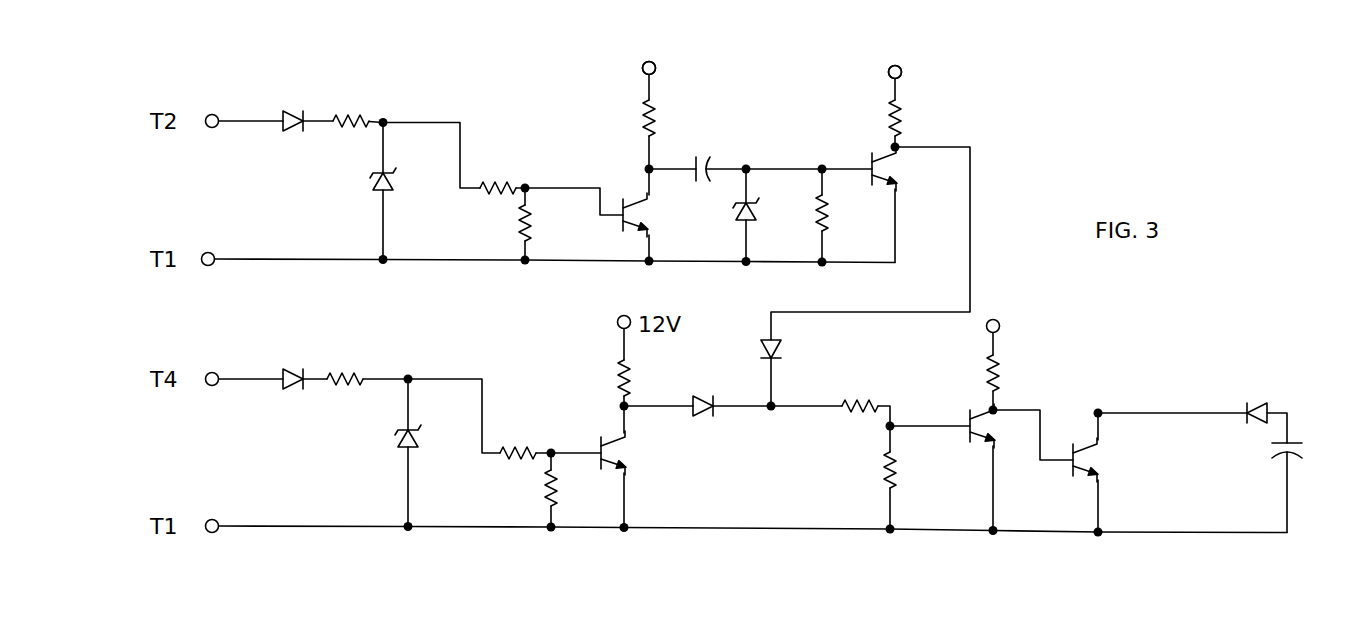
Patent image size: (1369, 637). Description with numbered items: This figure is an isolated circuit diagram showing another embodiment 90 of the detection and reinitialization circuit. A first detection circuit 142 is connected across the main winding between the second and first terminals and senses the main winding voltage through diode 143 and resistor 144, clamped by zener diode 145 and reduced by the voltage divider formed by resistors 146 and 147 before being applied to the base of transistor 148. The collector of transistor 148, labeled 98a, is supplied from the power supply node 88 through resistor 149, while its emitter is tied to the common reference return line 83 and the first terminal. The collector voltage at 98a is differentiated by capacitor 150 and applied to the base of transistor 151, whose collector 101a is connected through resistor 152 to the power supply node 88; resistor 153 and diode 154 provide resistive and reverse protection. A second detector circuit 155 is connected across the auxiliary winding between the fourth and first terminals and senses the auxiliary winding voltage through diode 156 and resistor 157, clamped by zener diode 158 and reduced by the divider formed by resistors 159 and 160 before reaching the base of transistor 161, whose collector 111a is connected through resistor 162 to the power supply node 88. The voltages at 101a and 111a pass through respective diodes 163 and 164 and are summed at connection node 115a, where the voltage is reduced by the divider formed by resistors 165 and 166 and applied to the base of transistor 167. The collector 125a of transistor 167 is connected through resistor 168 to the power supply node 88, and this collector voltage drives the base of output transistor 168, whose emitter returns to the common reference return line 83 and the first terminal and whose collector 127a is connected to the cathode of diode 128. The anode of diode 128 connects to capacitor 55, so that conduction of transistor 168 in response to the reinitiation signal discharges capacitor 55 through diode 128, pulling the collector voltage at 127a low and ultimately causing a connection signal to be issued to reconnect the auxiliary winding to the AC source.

The capacitor 55 is at (1305, 452).
The common reference return line 83 is at (576, 264).
The power supply node 88 is at (642, 68).
The detection and reinitialization circuit embodiment 90 is at (1040, 235).
The collector of transistor 148 98a is at (645, 165).
The collector of transistor 151 101a is at (898, 146).
The collector of transistor 161 111a is at (626, 412).
The connection node 115a is at (771, 410).
The collector of transistor 167 125a is at (1000, 408).
The collector of transistor 168 127a is at (1102, 413).
The diode 128 is at (1262, 400).
The first detection circuit 142 is at (326, 186).
The diode 143 is at (292, 108).
The resistor 144 is at (363, 116).
The zener diode 145 is at (392, 183).
The resistor 146 is at (498, 186).
The resistor 147 is at (514, 230).
The transistor 148 is at (640, 220).
The resistor 149 is at (640, 112).
The capacitor 150 is at (704, 160).
The transistor 151 is at (890, 172).
The resistor 152 is at (885, 118).
The resistor 153 is at (828, 215).
The diode 154 is at (756, 212).
The second detector circuit 155 is at (292, 447).
The diode 156 is at (290, 368).
The resistor 157 is at (346, 376).
The zener diode 158 is at (395, 440).
The resistor 159 is at (505, 456).
The resistor 160 is at (560, 492).
The transistor 161 is at (625, 472).
The resistor 162 is at (615, 372).
The diode 163 is at (765, 345).
The diode 164 is at (702, 394).
The resistor 165 is at (860, 400).
The resistor 166 is at (882, 456).
The transistor 167 is at (982, 445).
The resistor / transistor 168 is at (985, 374).